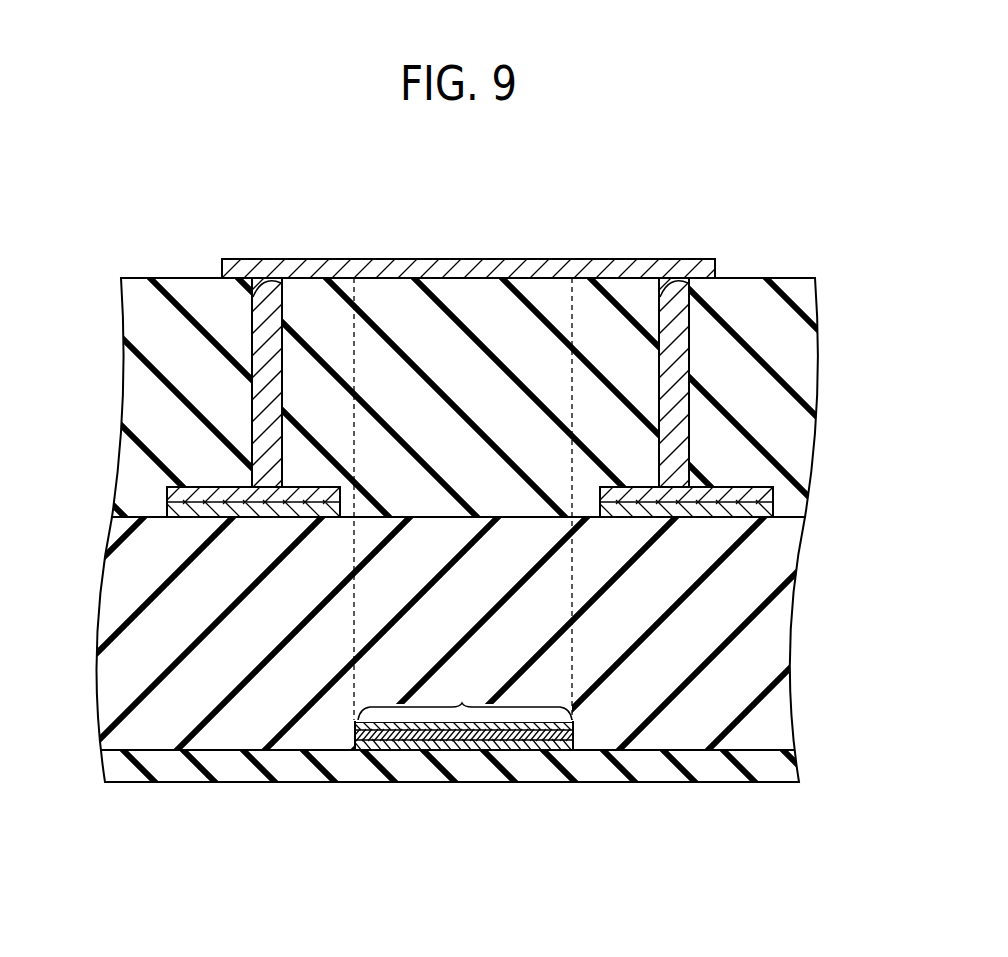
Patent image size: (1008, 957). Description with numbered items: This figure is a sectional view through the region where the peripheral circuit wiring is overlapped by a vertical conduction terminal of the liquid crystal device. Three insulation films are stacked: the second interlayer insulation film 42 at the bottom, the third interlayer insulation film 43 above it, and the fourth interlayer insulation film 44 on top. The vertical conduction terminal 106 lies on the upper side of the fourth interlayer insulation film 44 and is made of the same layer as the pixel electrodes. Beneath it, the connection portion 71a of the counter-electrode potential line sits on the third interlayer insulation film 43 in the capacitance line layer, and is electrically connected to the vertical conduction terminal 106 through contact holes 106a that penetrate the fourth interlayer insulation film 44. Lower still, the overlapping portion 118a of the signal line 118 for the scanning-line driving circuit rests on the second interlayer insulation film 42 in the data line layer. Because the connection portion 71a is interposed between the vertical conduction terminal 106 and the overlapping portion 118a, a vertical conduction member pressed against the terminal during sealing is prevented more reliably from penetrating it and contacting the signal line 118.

The fourth interlayer insulation film 44 is at (805, 336).
The third interlayer insulation film 43 is at (782, 612).
The second interlayer insulation film 42 is at (785, 763).
The vertical conduction terminal 106 is at (487, 268).
The contact hole 106a is at (261, 272).
The connection portion of the counter-electrode potential line 71a is at (215, 487).
The signal line for the scanning-line driving circuit 118 is at (548, 750).
The overlapping portion of the signal line 118a is at (462, 704).